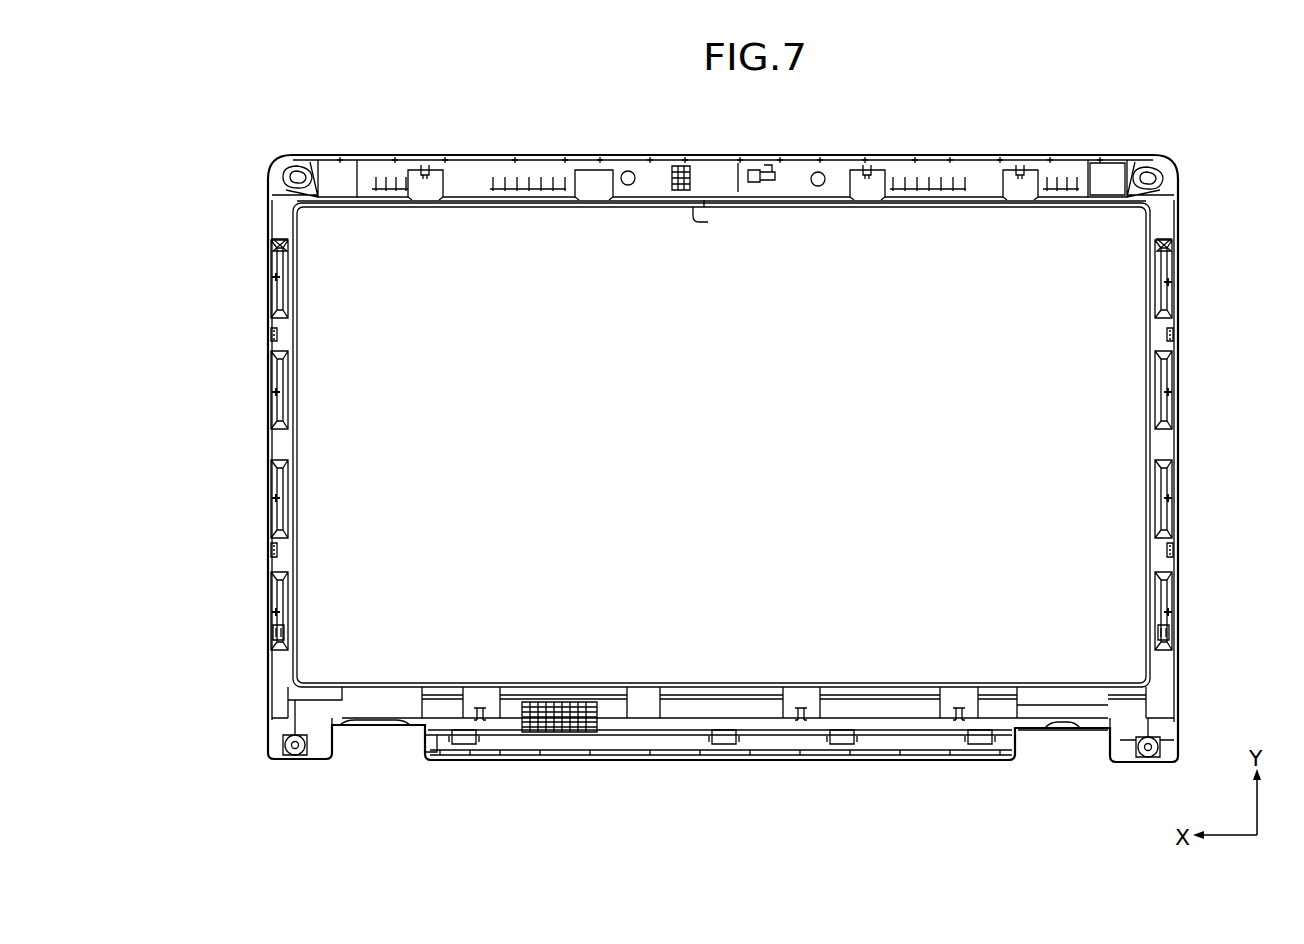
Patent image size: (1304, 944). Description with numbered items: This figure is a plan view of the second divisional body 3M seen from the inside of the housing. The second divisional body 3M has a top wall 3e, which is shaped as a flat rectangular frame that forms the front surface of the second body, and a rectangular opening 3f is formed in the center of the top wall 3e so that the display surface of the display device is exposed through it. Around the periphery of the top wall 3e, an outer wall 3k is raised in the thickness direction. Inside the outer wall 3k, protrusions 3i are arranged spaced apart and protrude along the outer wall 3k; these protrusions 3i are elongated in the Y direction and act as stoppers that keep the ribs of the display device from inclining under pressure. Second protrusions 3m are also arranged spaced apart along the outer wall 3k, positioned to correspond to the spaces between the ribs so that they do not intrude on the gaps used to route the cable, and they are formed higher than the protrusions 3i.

The top wall 3e is at (823, 175).
The outer wall 3k is at (927, 146).
The second divisional body 3M is at (1094, 146).
The opening 3f is at (699, 218).
The second protrusions 3m is at (281, 278).
The protrusions 3i is at (292, 247).